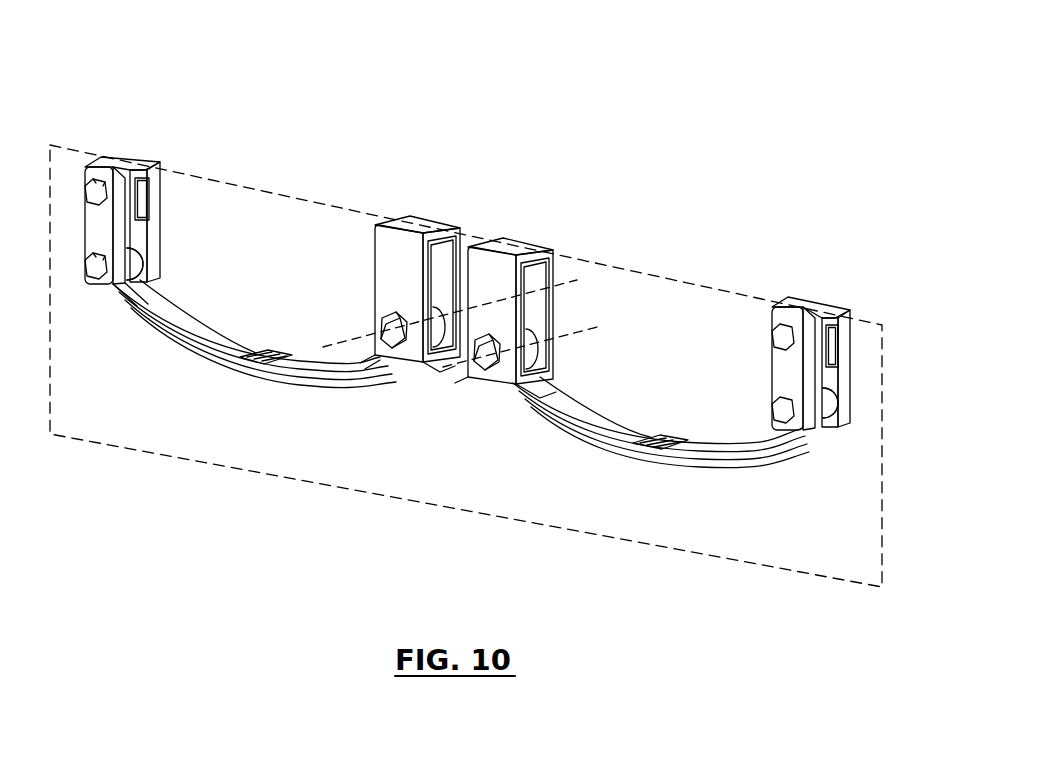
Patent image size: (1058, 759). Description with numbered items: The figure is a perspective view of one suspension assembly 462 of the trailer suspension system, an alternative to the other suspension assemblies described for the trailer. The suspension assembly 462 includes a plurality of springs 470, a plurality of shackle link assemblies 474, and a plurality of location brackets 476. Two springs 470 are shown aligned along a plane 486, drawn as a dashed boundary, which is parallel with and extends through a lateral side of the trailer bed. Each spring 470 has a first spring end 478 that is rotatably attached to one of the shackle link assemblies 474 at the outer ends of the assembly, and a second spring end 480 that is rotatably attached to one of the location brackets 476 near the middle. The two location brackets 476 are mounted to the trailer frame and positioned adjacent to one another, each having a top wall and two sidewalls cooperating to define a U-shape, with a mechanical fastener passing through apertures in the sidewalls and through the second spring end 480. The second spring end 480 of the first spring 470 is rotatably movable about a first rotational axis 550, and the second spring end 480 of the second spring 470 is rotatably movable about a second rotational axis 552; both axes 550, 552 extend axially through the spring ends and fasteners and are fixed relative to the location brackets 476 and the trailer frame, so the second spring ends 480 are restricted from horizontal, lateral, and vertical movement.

The suspension assembly 462 is at (238, 70).
The spring 470 is at (147, 318).
The shackle link assembly 474 is at (172, 242).
The location bracket 476 is at (438, 228).
The first spring end 478 is at (140, 272).
The second spring end 480 is at (432, 335).
The plane 486 is at (884, 329).
The first rotational axis 550 is at (320, 344).
The second rotational axis 552 is at (597, 330).